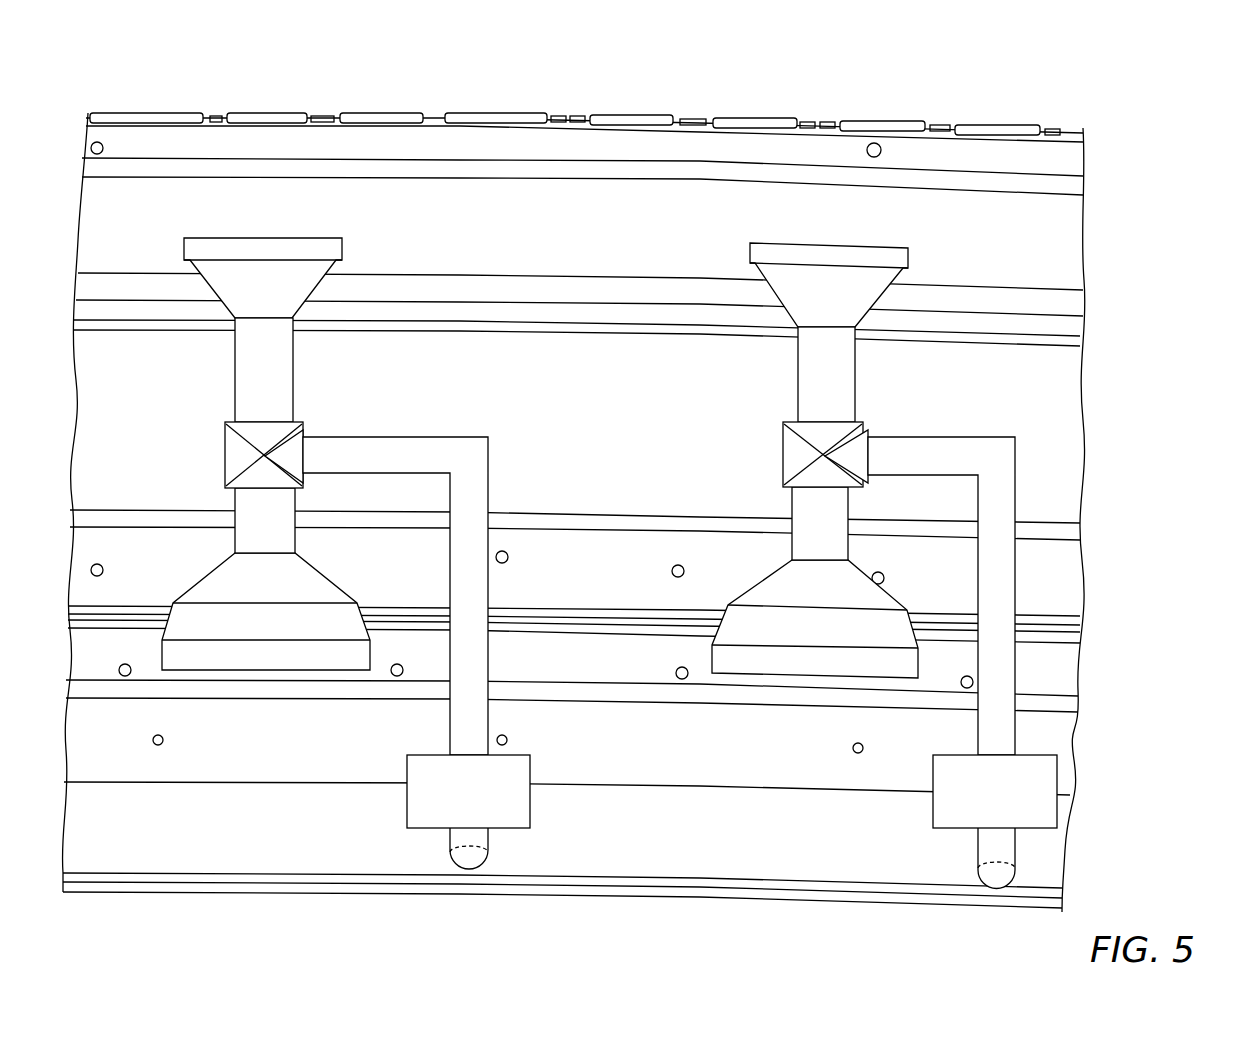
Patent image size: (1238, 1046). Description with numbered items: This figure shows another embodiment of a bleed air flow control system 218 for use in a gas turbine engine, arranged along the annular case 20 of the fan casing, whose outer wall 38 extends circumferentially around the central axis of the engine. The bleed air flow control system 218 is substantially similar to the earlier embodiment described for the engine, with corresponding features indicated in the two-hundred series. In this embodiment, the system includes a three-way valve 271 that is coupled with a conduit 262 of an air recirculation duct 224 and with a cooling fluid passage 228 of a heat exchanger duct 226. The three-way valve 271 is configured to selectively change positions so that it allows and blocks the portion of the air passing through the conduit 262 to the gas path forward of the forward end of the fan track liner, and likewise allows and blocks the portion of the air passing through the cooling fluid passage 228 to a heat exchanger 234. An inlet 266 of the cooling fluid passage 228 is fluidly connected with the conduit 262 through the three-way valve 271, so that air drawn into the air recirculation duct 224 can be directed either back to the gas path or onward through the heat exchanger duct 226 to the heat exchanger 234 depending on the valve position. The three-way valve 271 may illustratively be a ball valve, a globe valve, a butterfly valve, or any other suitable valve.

The annular case 20 is at (245, 102).
The bleed air flow control system 218 is at (425, 226).
The outer wall 38 is at (130, 425).
The air recirculation duct 224 is at (448, 382).
The conduit 262 is at (310, 392).
The three-way valve 271 is at (232, 455).
The inlet 266 is at (308, 455).
The cooling fluid passage 228 is at (490, 662).
The heat exchanger duct 226 is at (597, 720).
The heat exchanger 234 is at (533, 803).